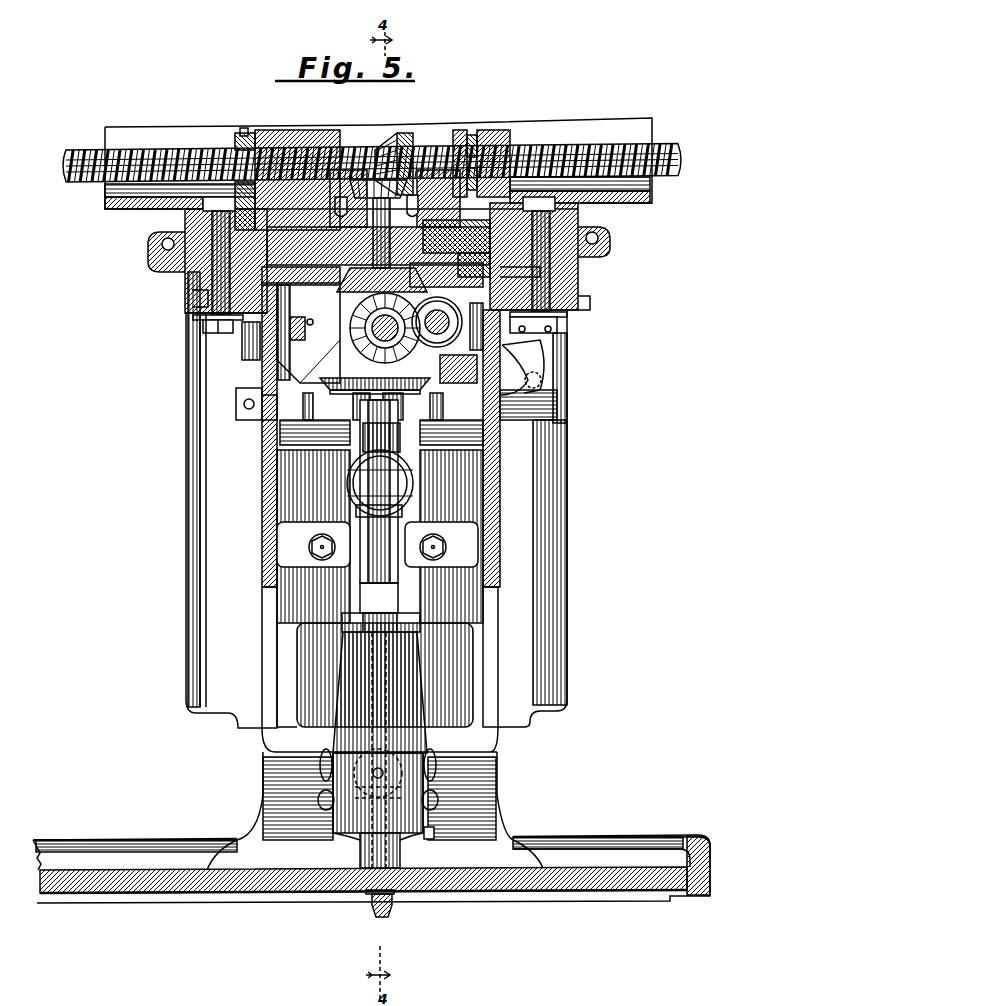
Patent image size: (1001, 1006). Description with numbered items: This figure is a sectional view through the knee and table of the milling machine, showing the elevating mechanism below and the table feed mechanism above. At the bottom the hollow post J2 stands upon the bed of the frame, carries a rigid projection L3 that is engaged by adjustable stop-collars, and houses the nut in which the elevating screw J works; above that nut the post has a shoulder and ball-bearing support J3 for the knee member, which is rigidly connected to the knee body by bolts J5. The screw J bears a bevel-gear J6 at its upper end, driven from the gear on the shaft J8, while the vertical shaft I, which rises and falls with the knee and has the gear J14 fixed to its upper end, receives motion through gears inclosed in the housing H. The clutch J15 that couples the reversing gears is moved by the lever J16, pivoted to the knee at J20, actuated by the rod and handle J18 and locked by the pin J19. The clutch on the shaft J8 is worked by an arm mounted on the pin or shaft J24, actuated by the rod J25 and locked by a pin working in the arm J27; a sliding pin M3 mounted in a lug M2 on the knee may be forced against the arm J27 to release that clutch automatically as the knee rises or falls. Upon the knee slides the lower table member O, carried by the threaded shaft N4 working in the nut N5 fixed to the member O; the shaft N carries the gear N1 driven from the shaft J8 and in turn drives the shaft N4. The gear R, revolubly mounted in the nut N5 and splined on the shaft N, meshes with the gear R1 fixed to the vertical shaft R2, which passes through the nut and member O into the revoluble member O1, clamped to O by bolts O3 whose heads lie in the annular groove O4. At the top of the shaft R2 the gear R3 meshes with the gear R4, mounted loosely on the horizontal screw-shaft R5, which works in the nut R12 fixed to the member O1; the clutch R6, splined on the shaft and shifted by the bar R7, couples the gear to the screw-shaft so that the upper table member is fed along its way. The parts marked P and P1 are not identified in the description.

The screw-shaft R5 is at (684, 163).
The nut R12 is at (245, 130).
The gear R3 is at (366, 150).
The gear R4 is at (400, 134).
The clutch R6 is at (512, 128).
The bar R7 is at (474, 150).
The lower member of the table O is at (580, 226).
The horizontally-revoluble member O1 is at (643, 206).
The bolts O3 is at (240, 330).
The annular groove O4 is at (226, 196).
The shaft R2 is at (456, 236).
The gear casing part P1 is at (472, 246).
The gear casing part P is at (474, 265).
The gear R is at (480, 358).
The gear R1 is at (580, 288).
The shaft N is at (207, 284).
The gear N1 is at (265, 410).
The threaded shaft N4 is at (578, 306).
The nut N5 is at (217, 238).
The screw J is at (352, 478).
The hollow post J2 is at (350, 718).
The shoulder and ball-bearing support J3 is at (353, 481).
The bolts J5 is at (446, 552).
The bevel-gear J6 is at (445, 415).
The shaft J8 is at (287, 445).
The gear J14 is at (402, 506).
The clutch J15 is at (415, 487).
The lever J16 is at (262, 389).
The rod and handle J18 is at (264, 396).
The pin J19 is at (282, 336).
The pivot J20 is at (290, 398).
The pin or shaft J24 is at (565, 345).
The rod J25 is at (470, 405).
The arm J27 is at (565, 389).
The lug M2 is at (580, 378).
The sliding pin M3 is at (577, 367).
The rigid projection L3 is at (390, 641).
The housing H is at (432, 772).
The shaft I is at (371, 892).